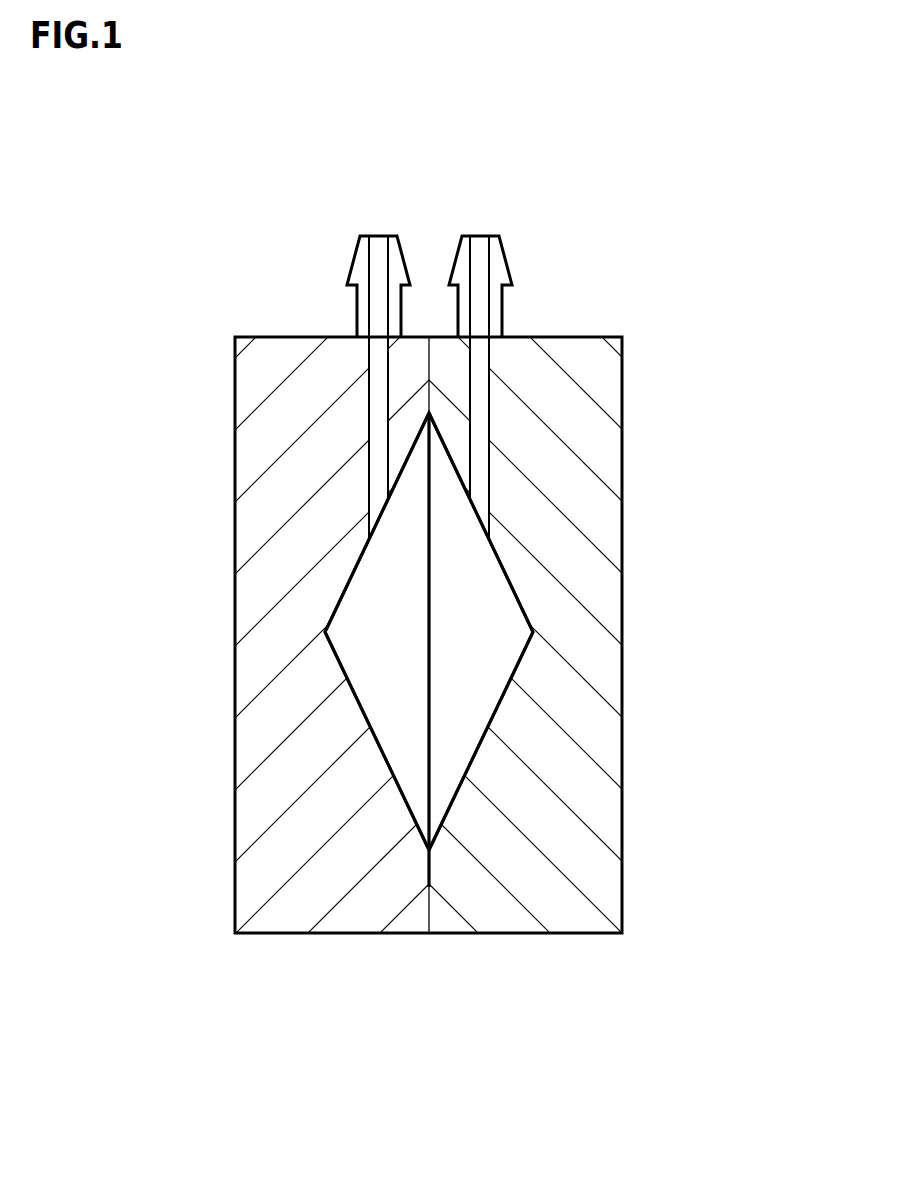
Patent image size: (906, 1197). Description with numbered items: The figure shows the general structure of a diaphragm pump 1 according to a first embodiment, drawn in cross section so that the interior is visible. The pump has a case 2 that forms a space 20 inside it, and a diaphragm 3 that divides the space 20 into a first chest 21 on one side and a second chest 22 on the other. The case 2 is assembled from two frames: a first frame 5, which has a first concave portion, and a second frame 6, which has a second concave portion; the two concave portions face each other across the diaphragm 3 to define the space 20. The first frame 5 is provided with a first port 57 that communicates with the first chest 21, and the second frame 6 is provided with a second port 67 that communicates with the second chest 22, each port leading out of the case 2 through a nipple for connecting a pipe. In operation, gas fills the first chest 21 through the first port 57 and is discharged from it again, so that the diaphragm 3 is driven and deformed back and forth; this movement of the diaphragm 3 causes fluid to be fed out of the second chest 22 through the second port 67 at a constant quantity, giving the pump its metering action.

The diaphragm pump 1 is at (587, 783).
The case 2 is at (343, 1070).
The diaphragm 3 is at (427, 714).
The first frame 5 is at (535, 875).
The second frame 6 is at (333, 873).
The space 20 is at (462, 578).
The first chest 21 is at (490, 617).
The second chest 22 is at (378, 620).
The first port 57 is at (490, 423).
The second port 67 is at (368, 418).